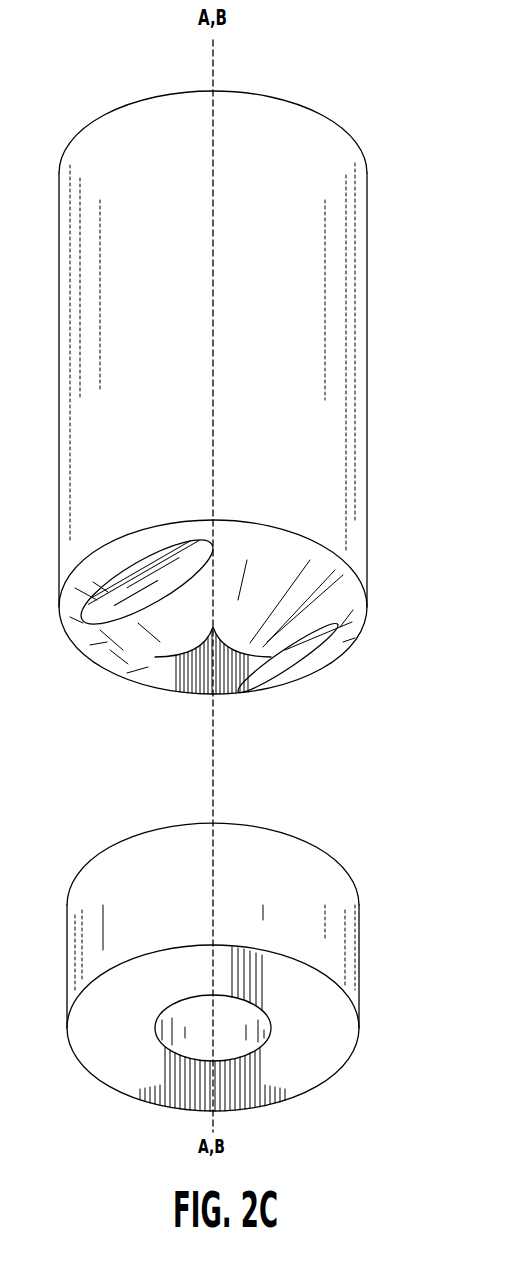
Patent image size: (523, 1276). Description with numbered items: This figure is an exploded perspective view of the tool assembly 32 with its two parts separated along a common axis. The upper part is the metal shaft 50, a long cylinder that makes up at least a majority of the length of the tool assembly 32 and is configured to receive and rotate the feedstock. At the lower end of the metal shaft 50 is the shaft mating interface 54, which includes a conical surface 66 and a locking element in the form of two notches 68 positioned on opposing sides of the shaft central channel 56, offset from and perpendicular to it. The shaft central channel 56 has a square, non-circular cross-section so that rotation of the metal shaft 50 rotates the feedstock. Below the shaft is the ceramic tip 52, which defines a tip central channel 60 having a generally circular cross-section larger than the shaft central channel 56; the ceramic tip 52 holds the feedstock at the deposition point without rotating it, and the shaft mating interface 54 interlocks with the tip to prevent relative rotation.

The tool assembly 32 is at (431, 215).
The metal shaft 50 is at (367, 337).
The ceramic tip 52 is at (358, 950).
The shaft mating interface 54 is at (318, 568).
The shaft central channel 56 is at (176, 671).
The tip central channel 60 is at (240, 1036).
The conical surface 66 is at (347, 600).
The notches 68 is at (142, 592).